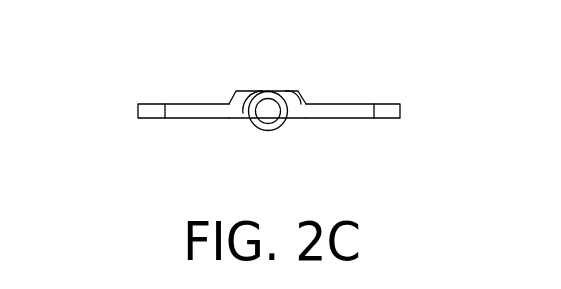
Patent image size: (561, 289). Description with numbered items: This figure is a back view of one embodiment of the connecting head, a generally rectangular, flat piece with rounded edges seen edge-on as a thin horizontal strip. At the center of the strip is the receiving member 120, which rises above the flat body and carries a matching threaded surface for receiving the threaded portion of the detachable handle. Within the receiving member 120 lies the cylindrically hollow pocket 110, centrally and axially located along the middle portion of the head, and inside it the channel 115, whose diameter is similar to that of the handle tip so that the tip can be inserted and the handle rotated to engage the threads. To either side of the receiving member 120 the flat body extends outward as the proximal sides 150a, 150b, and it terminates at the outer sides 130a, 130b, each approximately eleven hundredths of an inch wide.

The cylindrically hollow pocket 110 is at (252, 129).
The channel 115 is at (268, 111).
The receiving member 120 is at (243, 95).
The outer side 130a is at (152, 110).
The outer side 130b is at (388, 108).
The proximal side 150a is at (187, 109).
The proximal side 150b is at (353, 110).